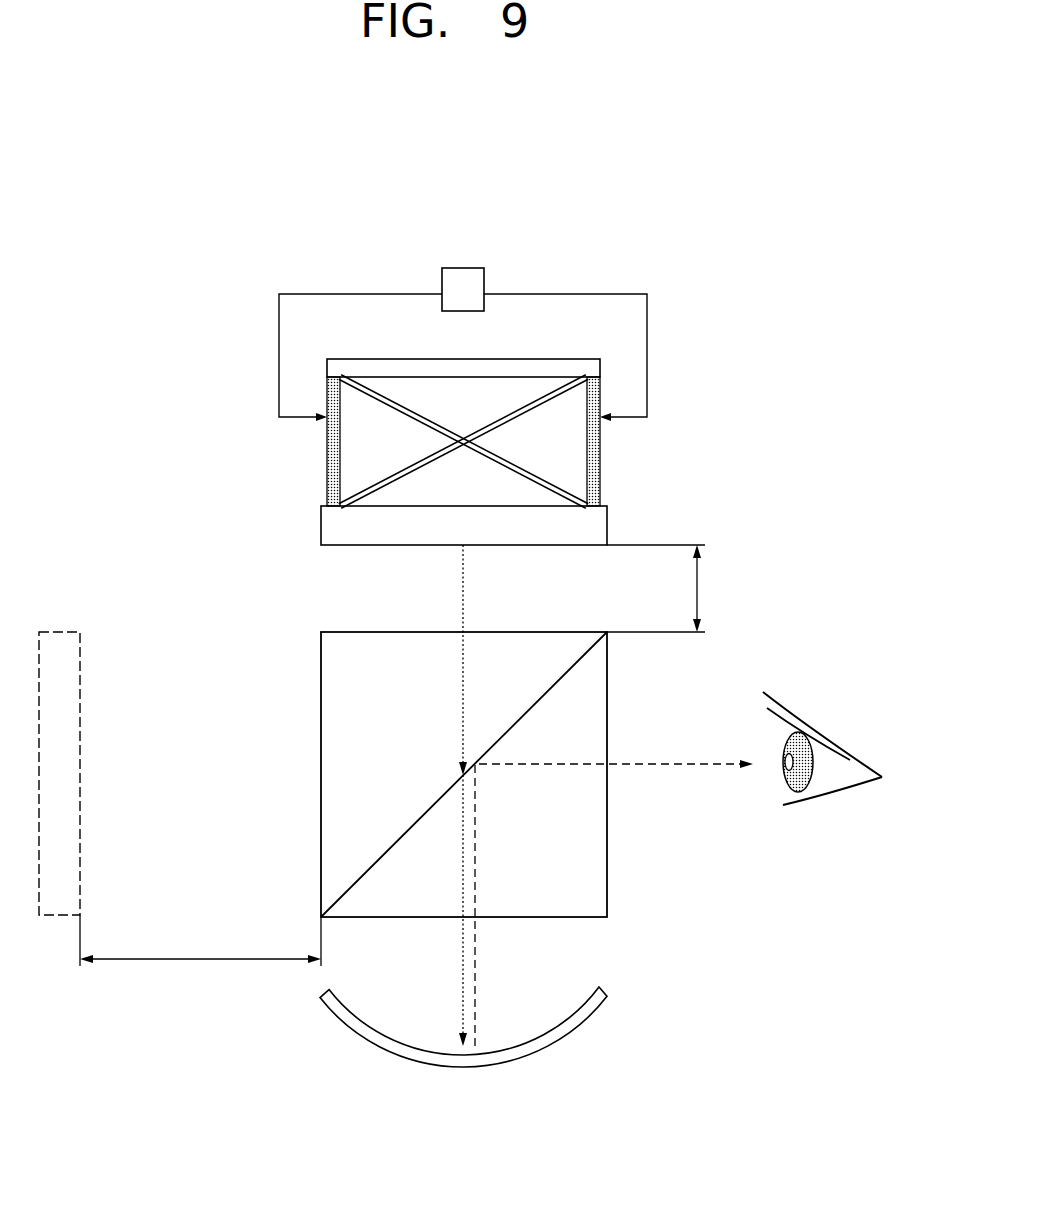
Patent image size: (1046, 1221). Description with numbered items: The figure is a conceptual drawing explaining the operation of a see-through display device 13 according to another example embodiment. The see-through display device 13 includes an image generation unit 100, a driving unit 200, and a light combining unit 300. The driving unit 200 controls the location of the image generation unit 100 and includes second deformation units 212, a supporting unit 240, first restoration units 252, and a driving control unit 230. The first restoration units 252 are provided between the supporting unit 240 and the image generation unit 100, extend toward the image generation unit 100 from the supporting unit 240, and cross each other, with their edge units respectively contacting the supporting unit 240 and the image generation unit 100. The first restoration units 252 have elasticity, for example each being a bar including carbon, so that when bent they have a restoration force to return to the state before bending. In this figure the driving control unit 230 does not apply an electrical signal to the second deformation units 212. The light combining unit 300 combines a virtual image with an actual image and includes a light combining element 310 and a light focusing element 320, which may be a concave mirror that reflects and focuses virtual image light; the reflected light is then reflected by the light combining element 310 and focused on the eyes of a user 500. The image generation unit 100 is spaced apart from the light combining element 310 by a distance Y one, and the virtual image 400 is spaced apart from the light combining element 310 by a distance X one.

The see-through display device 13 is at (774, 254).
The image generation unit 100 is at (607, 512).
The driving unit 200 is at (730, 274).
The second deformation units 212 is at (600, 476).
The driving control unit 230 is at (484, 291).
The supporting unit 240 is at (600, 368).
The first restoration units 252 is at (563, 397).
The light combining unit 300 is at (707, 882).
The light combining element 310 is at (607, 884).
The light focusing element 320 is at (607, 997).
The virtual image 400 is at (59, 631).
The user 500 is at (828, 782).